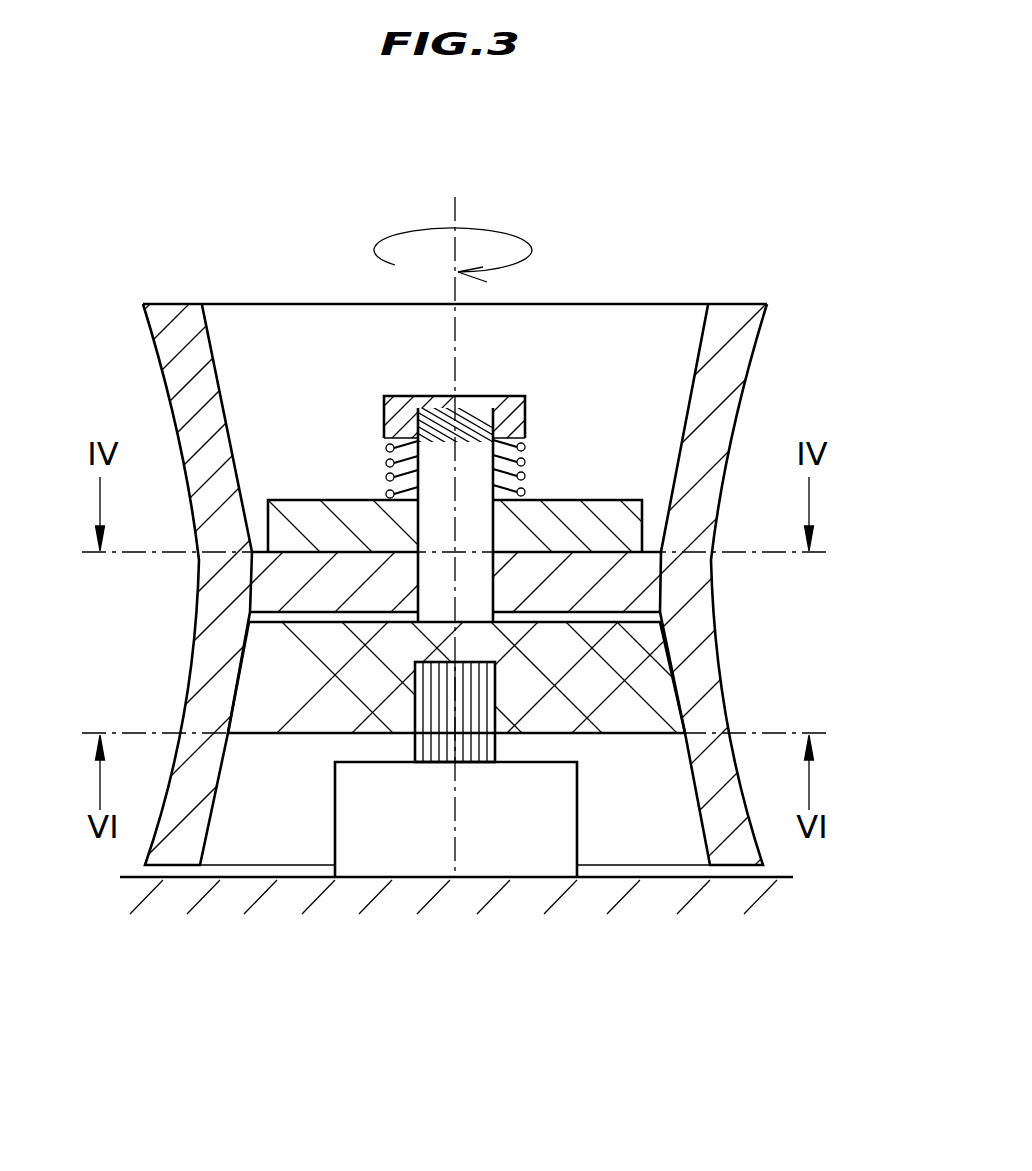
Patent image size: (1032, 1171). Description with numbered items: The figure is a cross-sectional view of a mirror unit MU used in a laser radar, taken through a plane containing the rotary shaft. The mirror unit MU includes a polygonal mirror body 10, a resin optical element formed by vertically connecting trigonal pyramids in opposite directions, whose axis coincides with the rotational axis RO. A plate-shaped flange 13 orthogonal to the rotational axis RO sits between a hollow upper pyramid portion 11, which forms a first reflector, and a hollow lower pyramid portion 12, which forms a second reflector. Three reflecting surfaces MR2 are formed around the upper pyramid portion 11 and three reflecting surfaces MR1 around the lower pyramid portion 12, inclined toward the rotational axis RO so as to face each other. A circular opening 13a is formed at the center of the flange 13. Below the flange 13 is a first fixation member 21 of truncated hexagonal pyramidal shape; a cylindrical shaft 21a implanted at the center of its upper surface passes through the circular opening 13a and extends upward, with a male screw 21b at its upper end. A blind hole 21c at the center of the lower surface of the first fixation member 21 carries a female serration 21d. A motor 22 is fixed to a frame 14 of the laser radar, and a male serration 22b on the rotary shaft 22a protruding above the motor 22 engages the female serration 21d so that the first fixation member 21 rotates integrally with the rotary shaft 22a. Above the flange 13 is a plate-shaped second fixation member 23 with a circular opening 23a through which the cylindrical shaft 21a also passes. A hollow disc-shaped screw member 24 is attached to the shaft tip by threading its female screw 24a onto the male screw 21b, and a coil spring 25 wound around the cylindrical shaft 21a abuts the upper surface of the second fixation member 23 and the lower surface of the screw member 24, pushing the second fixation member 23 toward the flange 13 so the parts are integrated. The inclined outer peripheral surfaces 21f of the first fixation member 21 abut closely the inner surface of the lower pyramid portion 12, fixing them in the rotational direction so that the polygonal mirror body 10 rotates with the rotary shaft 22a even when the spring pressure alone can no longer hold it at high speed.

The polygonal mirror body 10 is at (147, 303).
The upper pyramid portion 11 is at (730, 317).
The lower pyramid portion 12 is at (755, 866).
The flange 13 is at (330, 580).
The circular opening 13a is at (495, 605).
The frame 14 is at (608, 880).
The first fixation member 21 is at (290, 676).
The cylindrical shaft 21a is at (318, 700).
The male screw 21b is at (440, 427).
The blind hole 21c is at (437, 762).
The female serration 21d is at (495, 661).
The outer peripheral surfaces 21f is at (245, 643).
The motor 22 is at (392, 850).
The rotary shaft 22a is at (470, 763).
The male serration 22b is at (497, 742).
The second fixation member 23 is at (267, 500).
The circular opening 23a is at (383, 500).
The screw member 24 is at (525, 397).
The female screw 24a is at (412, 399).
The coil spring 25 is at (517, 458).
The rotational axis RO is at (458, 221).
The mirror unit MU is at (768, 304).
The reflecting surfaces MR1 is at (232, 718).
The reflecting surfaces MR2 is at (172, 438).